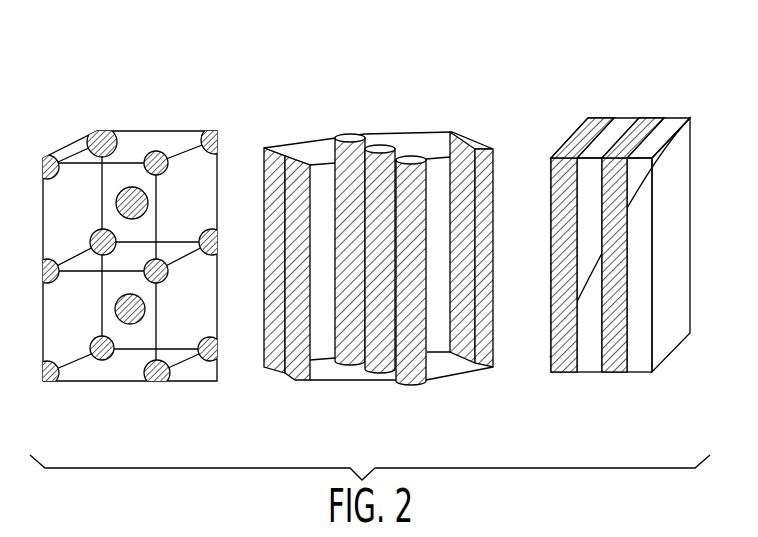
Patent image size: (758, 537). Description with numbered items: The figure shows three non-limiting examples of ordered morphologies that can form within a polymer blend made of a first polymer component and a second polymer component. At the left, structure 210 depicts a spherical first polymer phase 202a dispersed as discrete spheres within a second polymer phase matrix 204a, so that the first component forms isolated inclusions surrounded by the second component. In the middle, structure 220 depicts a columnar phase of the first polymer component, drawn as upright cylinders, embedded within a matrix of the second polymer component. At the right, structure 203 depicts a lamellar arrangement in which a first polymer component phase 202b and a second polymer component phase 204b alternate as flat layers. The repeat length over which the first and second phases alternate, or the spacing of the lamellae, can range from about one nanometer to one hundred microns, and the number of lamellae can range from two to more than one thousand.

The structure 210 is at (113, 94).
The structure 220 is at (363, 98).
The composite structure with lamellar layers 203 is at (630, 92).
The spherical first polymer phase 202a is at (138, 323).
The second polymer phase matrix 204a is at (177, 333).
The first polymer component phase 202b is at (551, 357).
The second polymer component phase 204b is at (590, 353).